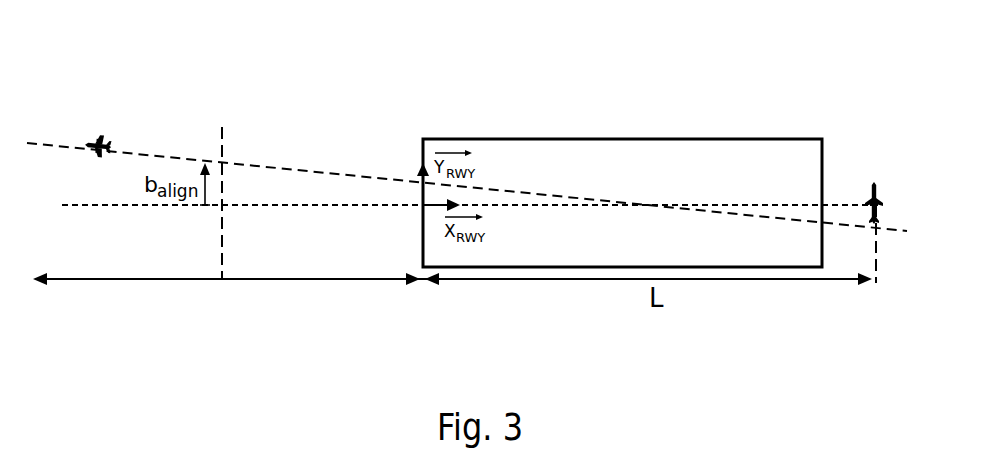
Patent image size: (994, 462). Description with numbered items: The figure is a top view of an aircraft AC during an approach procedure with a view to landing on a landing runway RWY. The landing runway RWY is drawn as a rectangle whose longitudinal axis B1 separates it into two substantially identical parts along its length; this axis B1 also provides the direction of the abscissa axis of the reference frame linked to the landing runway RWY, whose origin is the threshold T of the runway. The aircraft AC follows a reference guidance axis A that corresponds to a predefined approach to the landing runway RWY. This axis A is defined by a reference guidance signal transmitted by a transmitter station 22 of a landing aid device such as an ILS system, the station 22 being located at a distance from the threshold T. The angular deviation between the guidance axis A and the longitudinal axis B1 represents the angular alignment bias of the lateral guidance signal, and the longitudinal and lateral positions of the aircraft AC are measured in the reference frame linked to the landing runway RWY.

The aircraft AC is at (95, 135).
The reference guidance axis A is at (173, 157).
The landing runway RWY is at (713, 138).
The transmitter station 22 is at (860, 193).
The longitudinal axis of the landing runway B1 is at (259, 205).
The threshold of the landing runway T is at (420, 208).